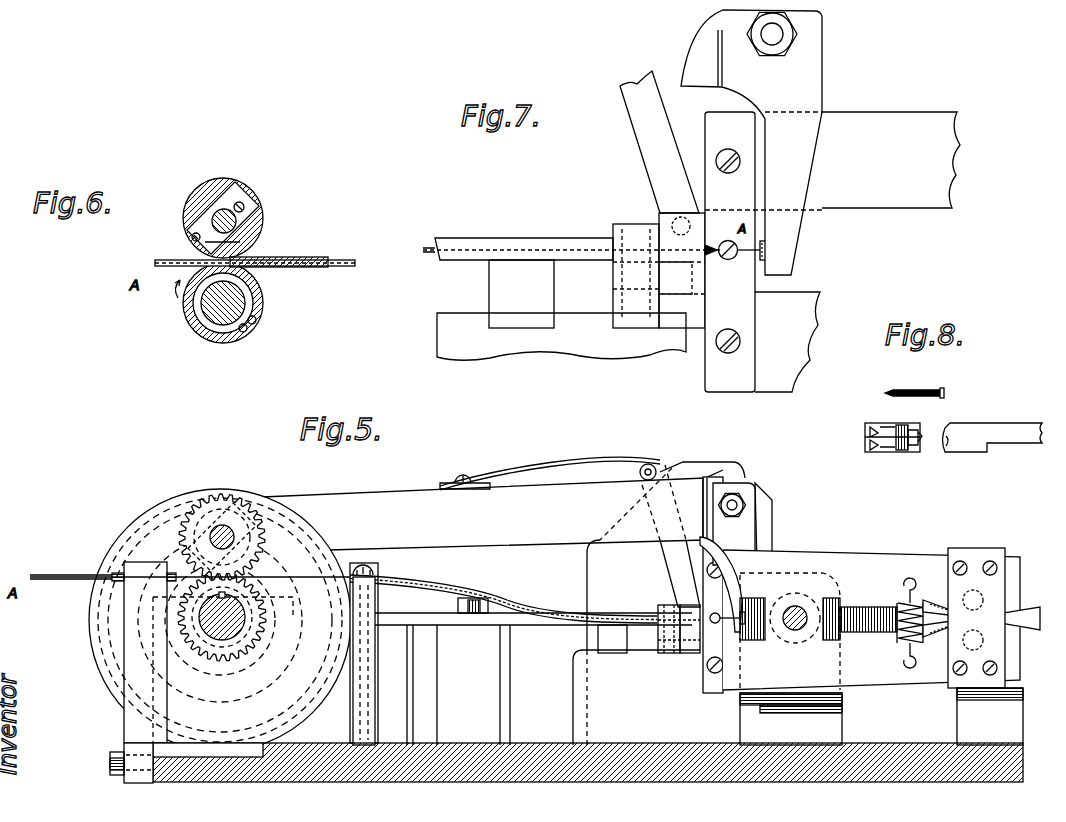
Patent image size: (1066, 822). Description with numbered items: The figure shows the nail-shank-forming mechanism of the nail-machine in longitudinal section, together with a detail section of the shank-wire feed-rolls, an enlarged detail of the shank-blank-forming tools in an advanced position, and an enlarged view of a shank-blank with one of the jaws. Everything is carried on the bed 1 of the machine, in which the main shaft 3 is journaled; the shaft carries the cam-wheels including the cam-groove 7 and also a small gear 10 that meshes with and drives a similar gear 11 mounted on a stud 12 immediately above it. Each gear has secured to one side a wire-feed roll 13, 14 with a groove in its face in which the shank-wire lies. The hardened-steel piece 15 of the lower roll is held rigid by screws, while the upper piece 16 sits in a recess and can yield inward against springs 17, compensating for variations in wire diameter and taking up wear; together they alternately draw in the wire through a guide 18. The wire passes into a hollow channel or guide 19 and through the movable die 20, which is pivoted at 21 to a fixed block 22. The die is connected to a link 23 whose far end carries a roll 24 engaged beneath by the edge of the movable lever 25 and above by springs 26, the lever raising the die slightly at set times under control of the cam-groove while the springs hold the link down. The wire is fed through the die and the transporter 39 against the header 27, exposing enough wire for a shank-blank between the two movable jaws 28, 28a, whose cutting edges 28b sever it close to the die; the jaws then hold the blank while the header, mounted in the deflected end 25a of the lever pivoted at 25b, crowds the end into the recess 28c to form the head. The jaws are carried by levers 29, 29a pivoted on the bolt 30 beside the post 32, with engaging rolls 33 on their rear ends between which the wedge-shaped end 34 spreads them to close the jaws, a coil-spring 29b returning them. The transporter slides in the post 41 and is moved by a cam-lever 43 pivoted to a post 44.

In FIG. 5, the bed 1 is at (541, 745).
In FIG. 6, the shaft 3 is at (190, 309).
In FIG. 5, the shaft 3 is at (216, 640).
In FIG. 5, the cam-groove 7 is at (162, 540).
In FIG. 5, the small gear 10 is at (223, 673).
In FIG. 5, the gear 11 is at (246, 512).
In FIG. 6, the stud 12 is at (214, 192).
In FIG. 5, the stud 12 is at (212, 525).
In FIG. 6, the wire-feed roll 13 is at (209, 340).
In FIG. 6, the wire-feed roll 14 is at (262, 229).
In FIG. 6, the hardened-steel piece 15 is at (257, 328).
In FIG. 6, the upper piece 16 is at (252, 203).
In FIG. 6, the springs 17 is at (192, 238).
In FIG. 5, the guide 18 is at (118, 580).
In FIG. 6, the hollow channel or guide 19 is at (310, 268).
In FIG. 7, the hollow channel or guide 19 is at (473, 264).
In FIG. 5, the hollow channel or guide 19 is at (436, 587).
In FIG. 7, the movable die 20 is at (682, 303).
In FIG. 5, the movable die 20 is at (690, 655).
In FIG. 7, the pivot 21 is at (682, 270).
In FIG. 5, the pivot 21 is at (688, 640).
In FIG. 7, the fixed block 22 is at (659, 276).
In FIG. 5, the fixed block 22 is at (662, 622).
In FIG. 7, the link 23 is at (659, 142).
In FIG. 5, the link 23 is at (666, 536).
In FIG. 5, the roll 24 is at (660, 470).
In FIG. 5, the movable lever 25 is at (492, 510).
In FIG. 7, the deflected end 25a is at (751, 142).
In FIG. 5, the deflected end 25a is at (748, 562).
In FIG. 7, the pivot 25b is at (772, 46).
In FIG. 5, the pivot 25b is at (737, 494).
In FIG. 5, the springs 26 is at (585, 465).
In FIG. 7, the header 27 is at (770, 254).
In FIG. 5, the header 27 is at (746, 625).
In FIG. 7, the movable jaw 28 is at (730, 252).
In FIG. 8, the movable jaw 28 is at (893, 455).
In FIG. 5, the movable jaw 28 is at (725, 660).
In FIG. 7, the movable jaw 28a is at (723, 187).
In FIG. 5, the movable jaw 28a is at (724, 509).
In FIG. 7, the cutting edges 28b is at (713, 245).
In FIG. 8, the cutting edges 28b is at (868, 440).
In FIG. 8, the recess 28c is at (922, 430).
In FIG. 7, the lever 29 is at (787, 342).
In FIG. 5, the lever 29 is at (871, 620).
In FIG. 7, the lever 29a is at (891, 160).
In FIG. 5, the lever 29a is at (906, 582).
In FIG. 5, the coil-spring 29b is at (900, 626).
In FIG. 5, the bolt 30 is at (797, 612).
In FIG. 5, the post 32 is at (881, 716).
In FIG. 5, the engaging rolls 33 is at (965, 606).
In FIG. 5, the wedge-shaped end 34 is at (1010, 600).
In FIG. 7, the transporter 39 is at (728, 260).
In FIG. 5, the transporter 39 is at (712, 600).
In FIG. 5, the post 41 is at (636, 606).
In FIG. 5, the cam-lever 43 is at (476, 626).
In FIG. 5, the post 44 is at (458, 685).